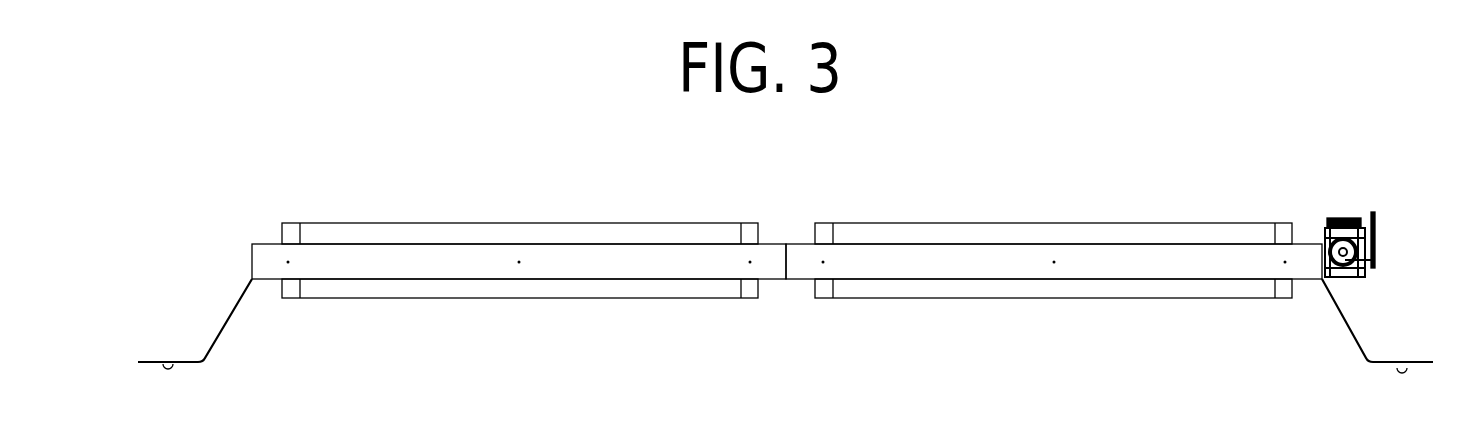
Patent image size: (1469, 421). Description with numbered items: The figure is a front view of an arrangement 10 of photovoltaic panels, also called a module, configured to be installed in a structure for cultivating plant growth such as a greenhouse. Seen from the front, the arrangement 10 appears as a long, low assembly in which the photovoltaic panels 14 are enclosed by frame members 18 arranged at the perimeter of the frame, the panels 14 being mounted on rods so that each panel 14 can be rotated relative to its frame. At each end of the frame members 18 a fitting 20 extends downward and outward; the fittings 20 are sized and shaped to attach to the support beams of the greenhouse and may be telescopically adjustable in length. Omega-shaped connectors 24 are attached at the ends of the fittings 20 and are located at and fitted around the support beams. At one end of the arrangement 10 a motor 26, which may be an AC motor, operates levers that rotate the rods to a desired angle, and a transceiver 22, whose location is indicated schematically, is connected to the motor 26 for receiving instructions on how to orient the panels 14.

The arrangement 10 is at (397, 126).
The photovoltaic panel 14 is at (623, 223).
The frame member 18 is at (1001, 278).
The fitting 20 is at (227, 318).
The transceiver 22 is at (1372, 232).
The connector 24 is at (163, 366).
The motor 26 is at (1350, 218).